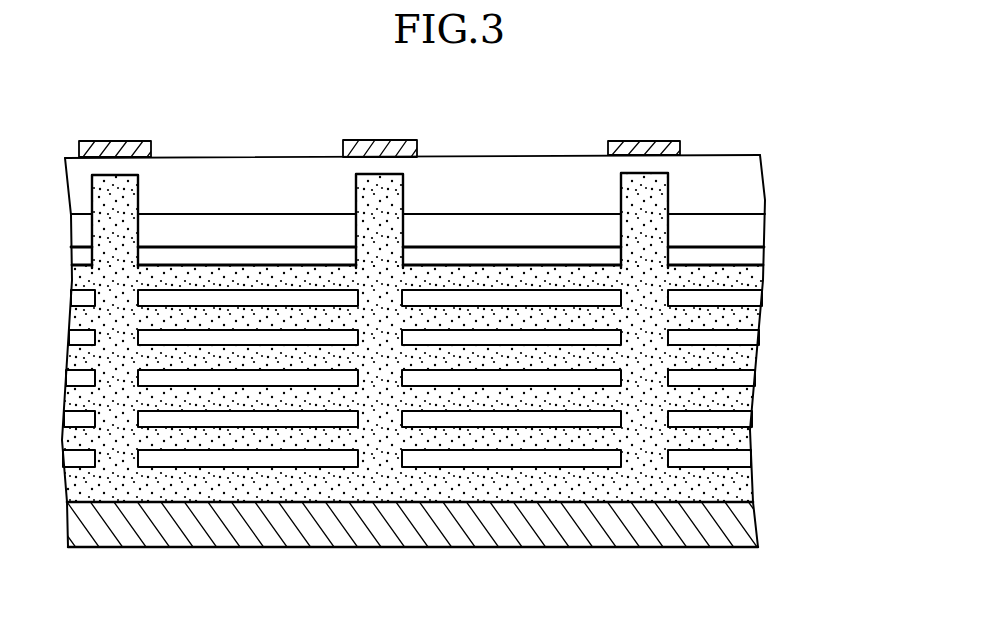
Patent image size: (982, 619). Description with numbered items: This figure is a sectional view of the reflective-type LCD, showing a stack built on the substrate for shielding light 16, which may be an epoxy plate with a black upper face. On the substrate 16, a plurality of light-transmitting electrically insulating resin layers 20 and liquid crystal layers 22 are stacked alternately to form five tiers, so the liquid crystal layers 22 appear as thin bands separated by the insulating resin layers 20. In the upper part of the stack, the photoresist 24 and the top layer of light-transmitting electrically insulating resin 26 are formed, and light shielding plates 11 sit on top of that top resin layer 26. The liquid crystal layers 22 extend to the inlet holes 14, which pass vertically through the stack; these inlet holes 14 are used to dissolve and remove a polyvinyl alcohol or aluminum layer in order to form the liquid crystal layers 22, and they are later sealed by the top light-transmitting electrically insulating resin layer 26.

The light shielding plate 11 is at (150, 141).
The inlet hole 14 is at (386, 450).
The substrate for shielding light 16 is at (718, 533).
The light-transmitting electrically insulating resin layer 20 is at (757, 257).
The liquid crystal layer 22 is at (752, 357).
The photoresist 24 is at (755, 228).
The top layer of light-transmitting electrically insulating resin 26 is at (765, 178).